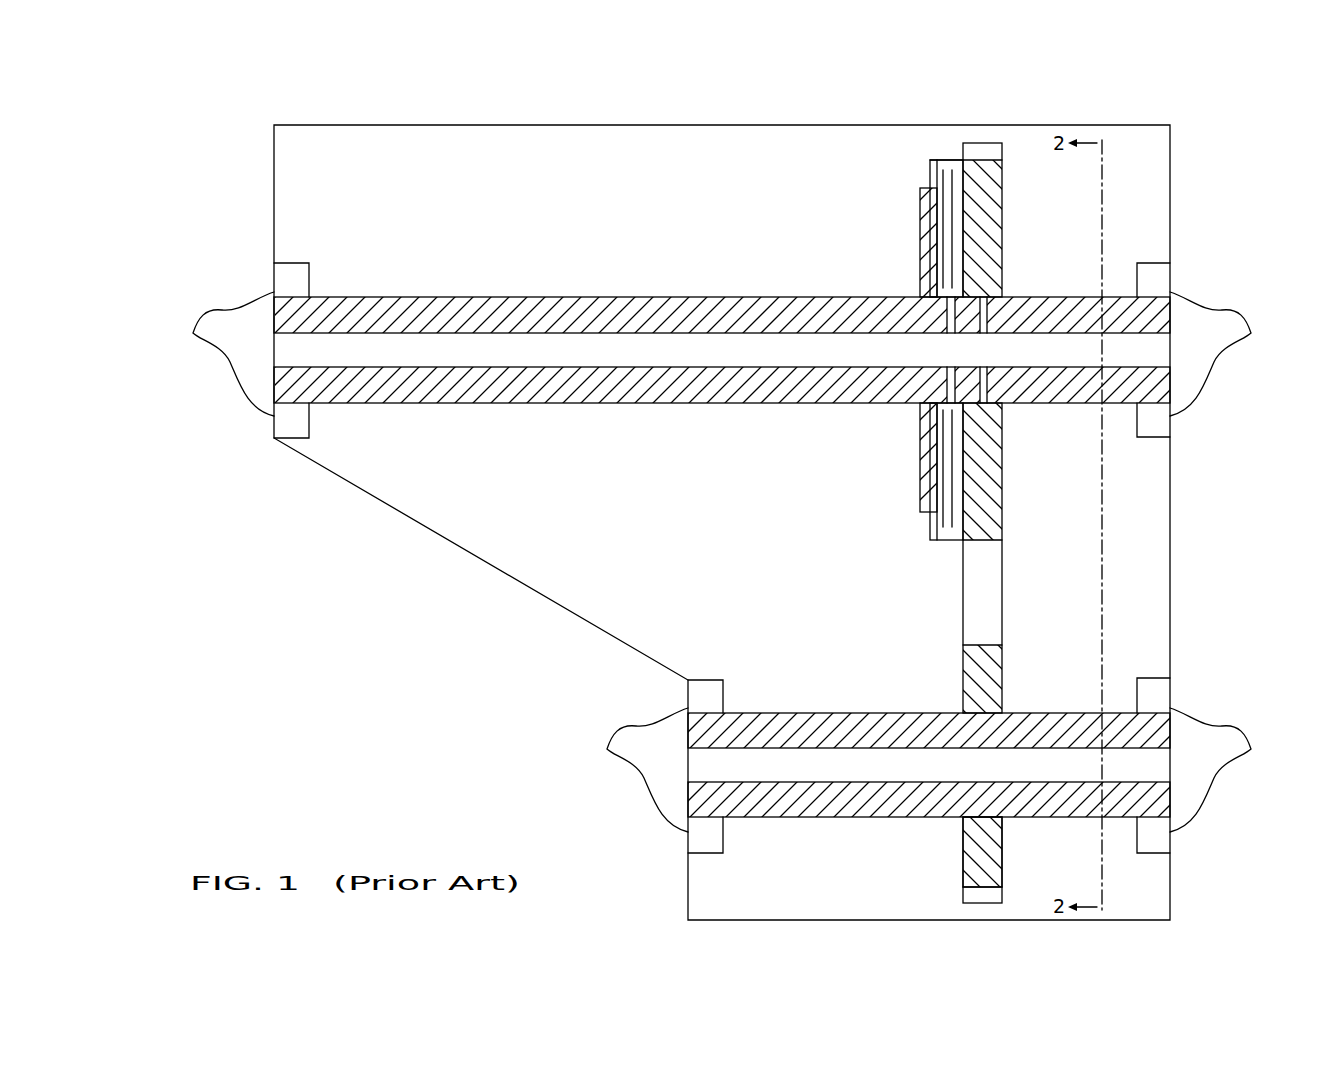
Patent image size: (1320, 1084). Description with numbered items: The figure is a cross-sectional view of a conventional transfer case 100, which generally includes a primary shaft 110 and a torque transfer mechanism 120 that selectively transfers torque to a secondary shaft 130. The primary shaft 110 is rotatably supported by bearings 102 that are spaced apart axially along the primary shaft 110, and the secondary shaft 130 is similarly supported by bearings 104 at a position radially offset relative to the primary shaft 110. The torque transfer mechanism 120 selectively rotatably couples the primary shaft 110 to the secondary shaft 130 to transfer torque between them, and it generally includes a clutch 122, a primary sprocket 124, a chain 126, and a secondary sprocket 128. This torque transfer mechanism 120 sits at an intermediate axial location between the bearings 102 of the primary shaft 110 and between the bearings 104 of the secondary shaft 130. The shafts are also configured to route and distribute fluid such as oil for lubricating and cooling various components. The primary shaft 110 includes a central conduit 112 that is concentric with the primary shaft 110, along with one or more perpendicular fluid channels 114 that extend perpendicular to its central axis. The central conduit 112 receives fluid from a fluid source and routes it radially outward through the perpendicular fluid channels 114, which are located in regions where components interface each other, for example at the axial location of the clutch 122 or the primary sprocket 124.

The transfer case 100 is at (177, 165).
The bearings 102 is at (724, 308).
The bearings 104 is at (770, 723).
The primary shaft 110 is at (490, 297).
The central conduit 112 is at (540, 335).
The perpendicular fluid channels 114 is at (995, 382).
The torque transfer mechanism 120 is at (940, 290).
The clutch 122 is at (940, 160).
The primary sprocket 124 is at (1002, 190).
The chain 126 is at (989, 143).
The secondary sprocket 128 is at (1002, 868).
The secondary shaft 130 is at (805, 713).